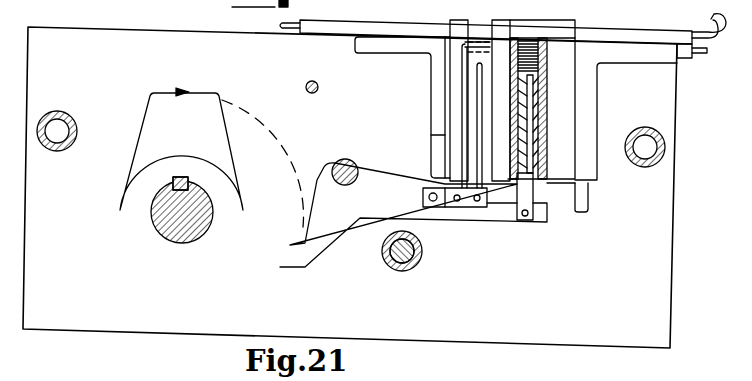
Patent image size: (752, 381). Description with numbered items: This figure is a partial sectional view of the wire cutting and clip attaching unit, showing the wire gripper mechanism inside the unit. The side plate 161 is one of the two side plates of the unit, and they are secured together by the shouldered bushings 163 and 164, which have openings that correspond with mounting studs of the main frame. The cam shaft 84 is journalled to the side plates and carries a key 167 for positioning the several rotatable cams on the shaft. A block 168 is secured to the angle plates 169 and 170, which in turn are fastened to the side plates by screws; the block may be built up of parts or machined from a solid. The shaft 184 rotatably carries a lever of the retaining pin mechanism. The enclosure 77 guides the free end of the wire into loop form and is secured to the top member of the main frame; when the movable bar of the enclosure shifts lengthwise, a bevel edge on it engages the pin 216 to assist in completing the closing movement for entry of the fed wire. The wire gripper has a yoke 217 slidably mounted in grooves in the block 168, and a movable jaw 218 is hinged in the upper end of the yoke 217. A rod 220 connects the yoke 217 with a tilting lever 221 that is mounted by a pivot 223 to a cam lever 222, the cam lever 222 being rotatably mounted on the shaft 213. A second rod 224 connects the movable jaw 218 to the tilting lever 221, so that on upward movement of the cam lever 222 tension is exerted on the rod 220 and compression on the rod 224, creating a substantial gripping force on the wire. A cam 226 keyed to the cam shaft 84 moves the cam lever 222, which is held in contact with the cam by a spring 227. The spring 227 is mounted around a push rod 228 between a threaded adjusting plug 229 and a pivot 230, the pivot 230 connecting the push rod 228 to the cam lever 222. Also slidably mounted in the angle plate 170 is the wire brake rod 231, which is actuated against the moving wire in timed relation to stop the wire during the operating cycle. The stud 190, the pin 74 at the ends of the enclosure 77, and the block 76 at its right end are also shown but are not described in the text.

The side plate 161 is at (663, 283).
The shouldered bushing 163 is at (67, 114).
The shouldered bushing 164 is at (663, 152).
The key 167 is at (186, 177).
The block 168 is at (560, 28).
The angle plate 169 is at (431, 97).
The angle plate 170 is at (597, 112).
The shaft 184 is at (411, 266).
The stud 190 is at (318, 85).
The shaft 213 is at (343, 158).
The pin 216 is at (480, 33).
The yoke 217 is at (490, 83).
The movable jaw 218 is at (479, 125).
The rod 220 is at (478, 203).
The tilting lever 221 is at (467, 203).
The cam lever 222 is at (308, 257).
The pivot 223 is at (423, 195).
The second rod 224 is at (450, 133).
The cam 226 is at (133, 247).
The spring 227 is at (547, 133).
The push rod 228 is at (527, 190).
The threaded adjusting plug 229 is at (548, 85).
The pivot 230 is at (525, 216).
The wire brake rod 231 is at (587, 200).
The pin 74 is at (290, 29).
The block 76 is at (684, 58).
The enclosure 77 is at (325, 32).
The cam shaft 84 is at (184, 241).